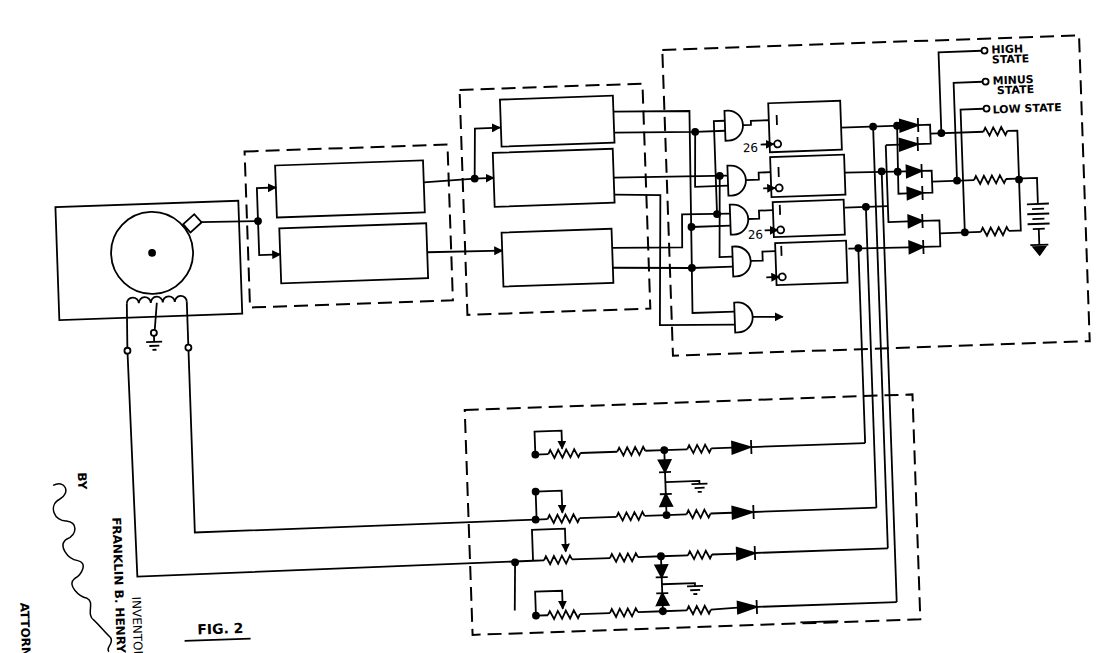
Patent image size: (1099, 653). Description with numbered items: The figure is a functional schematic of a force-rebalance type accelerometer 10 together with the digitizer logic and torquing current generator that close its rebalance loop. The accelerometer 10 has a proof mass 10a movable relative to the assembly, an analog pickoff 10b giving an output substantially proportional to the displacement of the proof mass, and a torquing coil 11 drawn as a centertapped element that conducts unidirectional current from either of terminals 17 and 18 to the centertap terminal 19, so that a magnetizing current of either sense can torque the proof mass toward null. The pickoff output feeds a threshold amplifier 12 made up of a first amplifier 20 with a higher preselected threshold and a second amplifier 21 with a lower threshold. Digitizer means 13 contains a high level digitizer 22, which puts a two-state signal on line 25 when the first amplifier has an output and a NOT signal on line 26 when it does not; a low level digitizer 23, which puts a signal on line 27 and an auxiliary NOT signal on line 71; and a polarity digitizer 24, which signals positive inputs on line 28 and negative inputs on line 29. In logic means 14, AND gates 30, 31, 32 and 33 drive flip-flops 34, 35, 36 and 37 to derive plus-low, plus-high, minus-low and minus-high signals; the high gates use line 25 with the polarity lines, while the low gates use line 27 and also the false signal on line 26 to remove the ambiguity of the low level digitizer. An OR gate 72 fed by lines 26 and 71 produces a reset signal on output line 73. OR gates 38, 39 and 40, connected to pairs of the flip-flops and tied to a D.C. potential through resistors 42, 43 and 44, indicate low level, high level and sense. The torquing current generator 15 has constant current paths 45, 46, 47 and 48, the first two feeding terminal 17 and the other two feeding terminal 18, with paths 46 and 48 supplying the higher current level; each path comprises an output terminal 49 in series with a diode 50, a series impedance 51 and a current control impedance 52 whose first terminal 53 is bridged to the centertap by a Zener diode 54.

The force-rebalance type accelerometer 10 is at (142, 186).
The proof mass 10a is at (126, 242).
The analog pickoff 10b is at (197, 205).
The torquing coil 11 is at (143, 322).
The threshold amplifier 12 is at (326, 298).
The digitizer means 13 is at (560, 87).
The logic means 14 is at (976, 362).
The torquing current generator 15 is at (911, 453).
The first end-terminal 17 is at (192, 334).
The second end-terminal 18 is at (124, 337).
The centertap terminal 19 is at (158, 318).
The first amplifier 20 is at (312, 270).
The second amplifier 21 is at (373, 156).
The first high level digitizer 22 is at (541, 285).
The second low level digitizer 23 is at (539, 205).
The third polarity digitizer 24 is at (508, 106).
The line 25 is at (623, 249).
The line 26 is at (654, 273).
The line 27 is at (637, 180).
The line 28 is at (688, 115).
The line 29 is at (664, 137).
The first AND gate 30 is at (735, 285).
The second AND gate 31 is at (742, 225).
The third AND gate 32 is at (749, 172).
The fourth AND gate 33 is at (745, 113).
The first flip-flop 34 is at (824, 293).
The second flip-flop 35 is at (841, 233).
The third flip-flop 36 is at (843, 183).
The fourth flip-flop 37 is at (840, 138).
The first OR gate 38 is at (930, 250).
The second OR gate 39 is at (924, 140).
The third OR gate 40 is at (935, 200).
The resistor 42 is at (990, 247).
The resistor 43 is at (974, 155).
The resistor 44 is at (997, 199).
The first constant current path 45 is at (829, 454).
The second constant current path 46 is at (839, 518).
The third constant current path 47 is at (842, 559).
The fourth constant current path 48 is at (855, 614).
The output terminal 49 is at (528, 454).
The diode 50 is at (736, 447).
The series impedance 51 is at (695, 450).
The two-terminal current control impedance 52 is at (561, 442).
The first terminal 53 is at (661, 452).
The Zener diode 54 is at (656, 474).
The line 71 is at (674, 260).
The OR gate 72 is at (751, 313).
The output line 73 is at (774, 258).